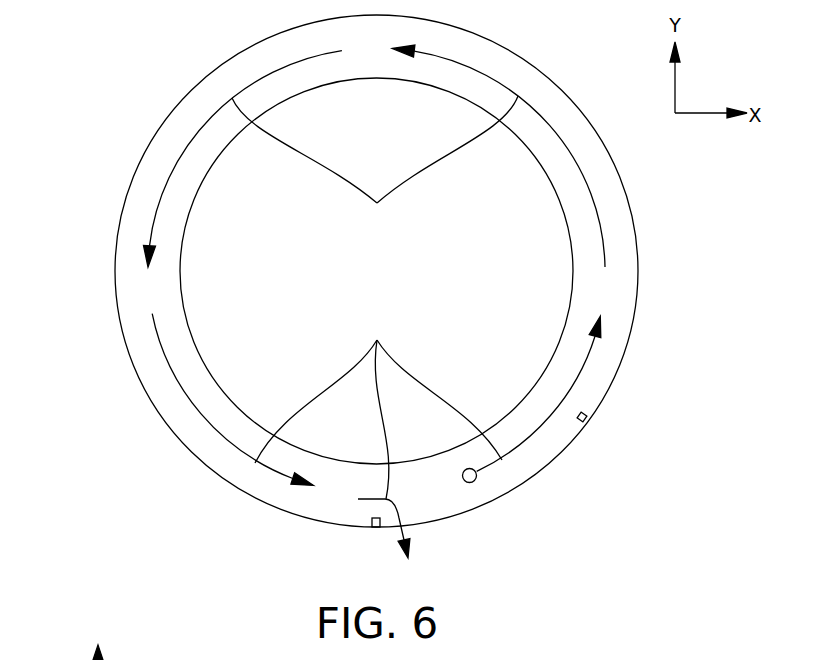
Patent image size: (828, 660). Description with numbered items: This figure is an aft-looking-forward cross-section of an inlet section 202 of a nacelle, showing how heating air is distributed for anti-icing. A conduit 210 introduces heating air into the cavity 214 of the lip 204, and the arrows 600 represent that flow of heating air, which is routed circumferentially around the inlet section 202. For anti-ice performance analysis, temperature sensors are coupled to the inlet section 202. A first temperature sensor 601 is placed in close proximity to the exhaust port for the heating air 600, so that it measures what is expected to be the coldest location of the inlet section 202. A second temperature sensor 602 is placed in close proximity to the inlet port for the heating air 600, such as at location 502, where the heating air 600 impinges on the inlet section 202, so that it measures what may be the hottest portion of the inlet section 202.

The inlet section 202 is at (155, 72).
The lip 204 is at (638, 278).
The cavity 214 is at (130, 297).
The heating air 600 is at (375, 279).
The first temperature sensor 601 is at (373, 528).
The second temperature sensor 602 is at (587, 418).
The location 502 is at (474, 481).
The conduit 210 is at (472, 484).